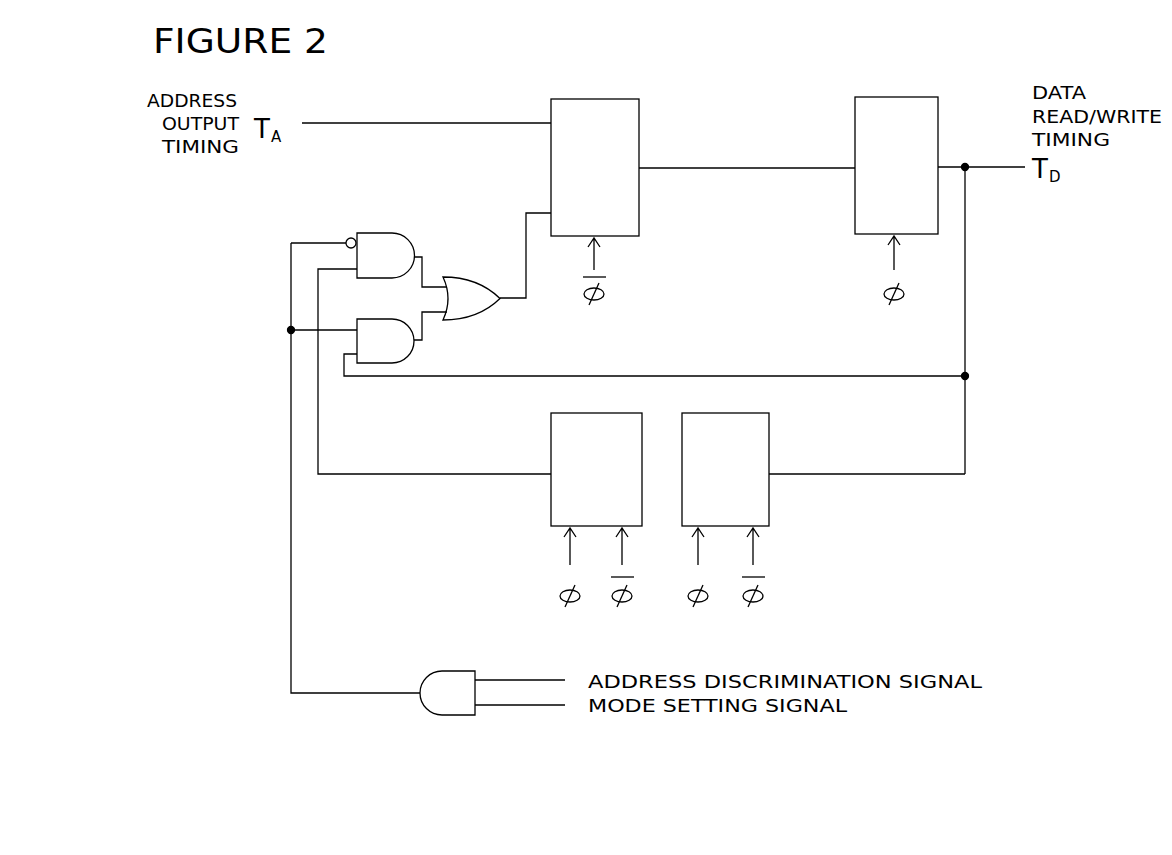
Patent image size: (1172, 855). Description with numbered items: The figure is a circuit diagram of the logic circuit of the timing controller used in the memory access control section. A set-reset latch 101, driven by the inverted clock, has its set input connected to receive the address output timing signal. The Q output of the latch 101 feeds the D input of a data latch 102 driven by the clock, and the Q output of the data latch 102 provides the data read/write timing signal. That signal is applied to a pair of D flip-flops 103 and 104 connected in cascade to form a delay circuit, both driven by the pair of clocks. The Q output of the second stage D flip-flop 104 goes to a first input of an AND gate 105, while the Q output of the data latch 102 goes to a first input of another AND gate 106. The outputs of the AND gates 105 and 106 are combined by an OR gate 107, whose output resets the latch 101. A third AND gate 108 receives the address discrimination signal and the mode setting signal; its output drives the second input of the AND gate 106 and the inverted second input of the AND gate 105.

The set-reset latch 101 is at (596, 99).
The data latch 102 is at (892, 97).
The D flip-flop 103 is at (772, 438).
The second stage D flip-flop 104 is at (550, 433).
The AND gate 105 is at (383, 233).
The AND gate 106 is at (412, 352).
The OR gate 107 is at (460, 277).
The third AND gate 108 is at (450, 671).